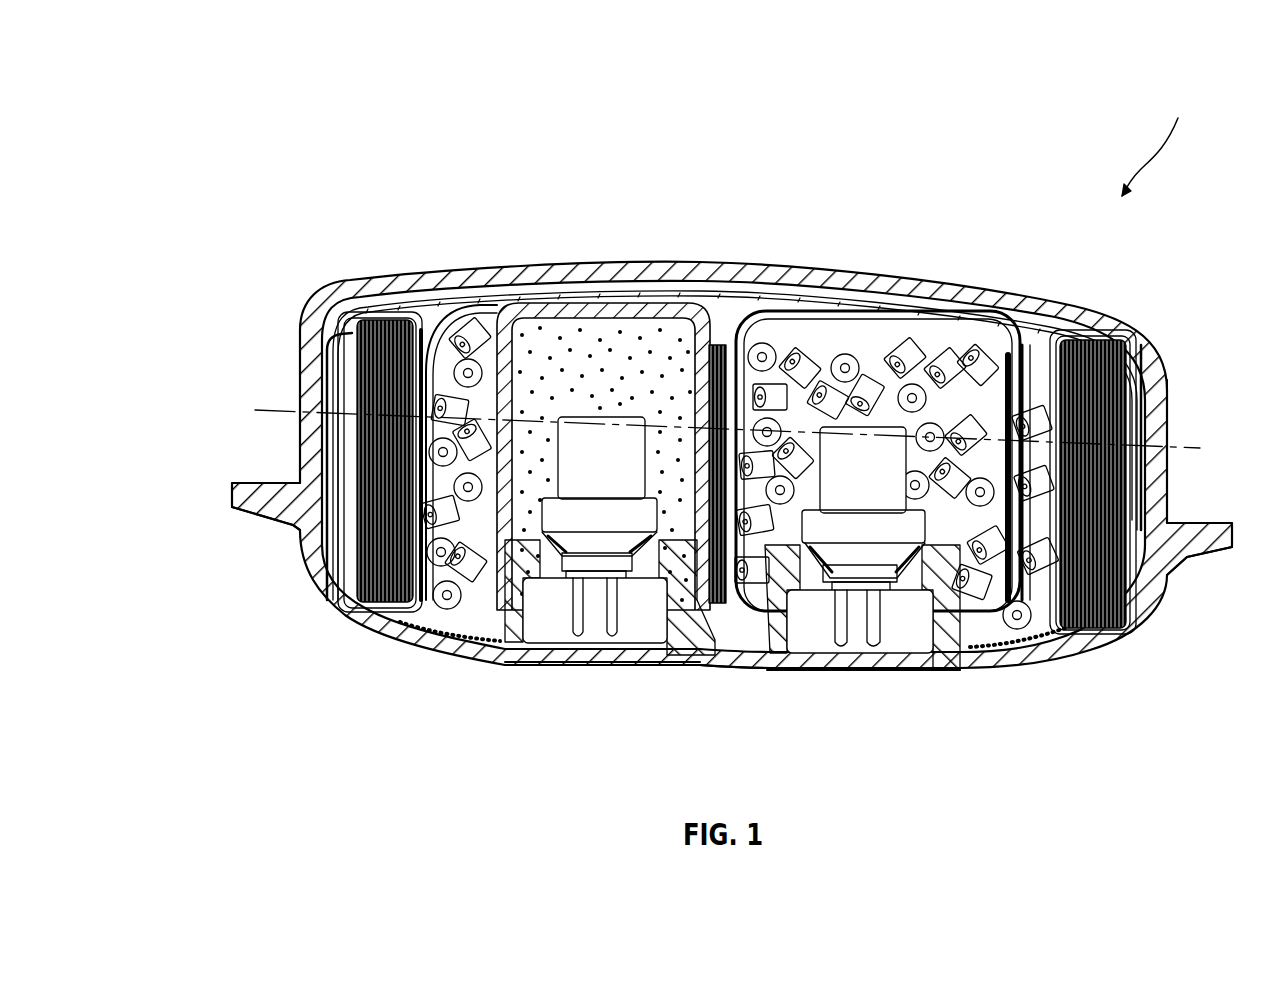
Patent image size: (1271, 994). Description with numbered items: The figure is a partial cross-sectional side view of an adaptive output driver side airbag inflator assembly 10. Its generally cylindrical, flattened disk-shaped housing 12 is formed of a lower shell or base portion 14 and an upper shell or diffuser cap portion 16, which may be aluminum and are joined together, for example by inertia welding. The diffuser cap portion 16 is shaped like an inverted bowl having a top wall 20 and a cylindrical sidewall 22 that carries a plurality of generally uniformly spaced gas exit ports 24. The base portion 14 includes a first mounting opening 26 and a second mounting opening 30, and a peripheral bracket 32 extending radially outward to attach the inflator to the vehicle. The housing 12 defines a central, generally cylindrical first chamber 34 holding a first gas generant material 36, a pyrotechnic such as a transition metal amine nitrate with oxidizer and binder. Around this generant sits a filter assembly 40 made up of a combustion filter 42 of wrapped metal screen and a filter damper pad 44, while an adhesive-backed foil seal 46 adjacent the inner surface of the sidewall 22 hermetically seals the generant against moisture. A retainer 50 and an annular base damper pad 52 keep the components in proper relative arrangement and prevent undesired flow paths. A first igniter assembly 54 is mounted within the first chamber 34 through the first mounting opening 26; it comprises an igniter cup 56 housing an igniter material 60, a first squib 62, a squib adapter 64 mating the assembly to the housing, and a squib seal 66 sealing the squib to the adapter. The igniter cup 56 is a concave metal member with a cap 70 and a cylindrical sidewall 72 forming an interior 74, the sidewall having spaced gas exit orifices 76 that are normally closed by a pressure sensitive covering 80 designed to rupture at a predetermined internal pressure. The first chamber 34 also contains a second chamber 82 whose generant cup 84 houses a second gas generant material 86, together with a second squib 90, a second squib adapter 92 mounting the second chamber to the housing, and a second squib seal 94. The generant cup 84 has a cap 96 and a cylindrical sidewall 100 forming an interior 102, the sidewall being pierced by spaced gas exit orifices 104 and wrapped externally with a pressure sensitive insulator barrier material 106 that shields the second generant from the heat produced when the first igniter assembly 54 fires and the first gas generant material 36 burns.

The inflator assembly 10 is at (1159, 138).
The housing 12 is at (1150, 326).
The base portion 14 is at (1045, 669).
The diffuser cap portion 16 is at (592, 279).
The top wall 20 is at (833, 271).
The sidewall 22 is at (1168, 405).
The gas exit ports 24 is at (1160, 449).
The first mounting opening 26 is at (478, 649).
The second mounting opening 30 is at (750, 663).
The peripheral bracket 32 is at (1218, 550).
The first chamber 34 is at (713, 346).
The first gas generant material 36 is at (390, 644).
The filter assembly 40 is at (313, 548).
The filter 42 is at (302, 324).
The filter damper pad 44 is at (387, 312).
The foil seal 46 is at (322, 348).
The retainer 50 is at (468, 318).
The base damper pad 52 is at (1000, 674).
The first igniter assembly 54 is at (582, 647).
The igniter cup 56 is at (538, 314).
The igniter material 60 is at (520, 326).
The first squib 62 is at (598, 521).
The squib adapter 64 is at (682, 618).
The squib seal 66 is at (663, 644).
The cap 70 is at (630, 313).
The cylindrical sidewall 72 is at (435, 366).
The interior 74 is at (660, 336).
The gas exit orifices 76 is at (335, 393).
The pressure sensitive covering 80 is at (460, 356).
The second chamber 82 is at (768, 351).
The generant cup 84 is at (925, 346).
The second gas generant material 86 is at (782, 351).
The second squib 90 is at (875, 646).
The second squib adapter 92 is at (950, 638).
The second squib seal 94 is at (910, 628).
The cap 96 is at (885, 326).
The cylindrical sidewall 100 is at (1020, 386).
The interior 102 is at (978, 346).
The gas exit orifices 104 is at (1087, 658).
The insulator barrier material 106 is at (1095, 313).